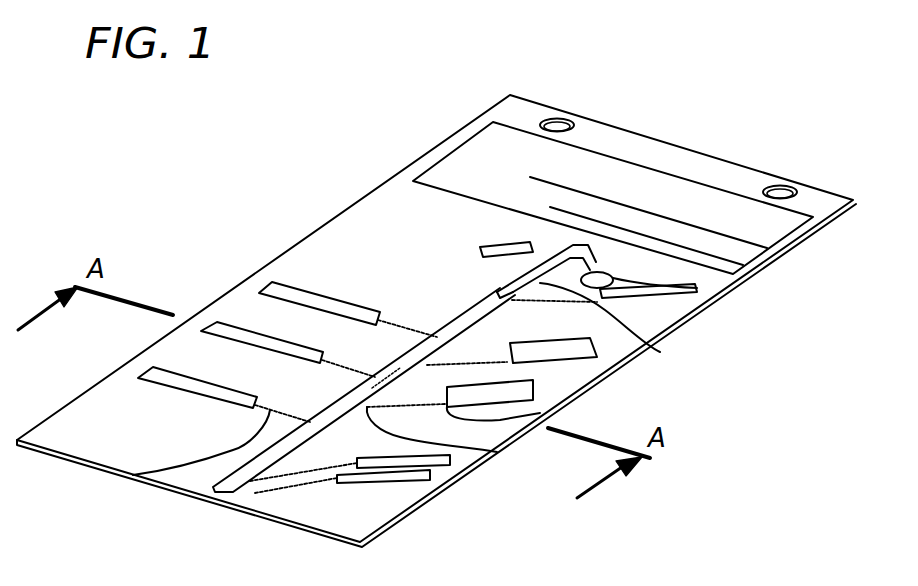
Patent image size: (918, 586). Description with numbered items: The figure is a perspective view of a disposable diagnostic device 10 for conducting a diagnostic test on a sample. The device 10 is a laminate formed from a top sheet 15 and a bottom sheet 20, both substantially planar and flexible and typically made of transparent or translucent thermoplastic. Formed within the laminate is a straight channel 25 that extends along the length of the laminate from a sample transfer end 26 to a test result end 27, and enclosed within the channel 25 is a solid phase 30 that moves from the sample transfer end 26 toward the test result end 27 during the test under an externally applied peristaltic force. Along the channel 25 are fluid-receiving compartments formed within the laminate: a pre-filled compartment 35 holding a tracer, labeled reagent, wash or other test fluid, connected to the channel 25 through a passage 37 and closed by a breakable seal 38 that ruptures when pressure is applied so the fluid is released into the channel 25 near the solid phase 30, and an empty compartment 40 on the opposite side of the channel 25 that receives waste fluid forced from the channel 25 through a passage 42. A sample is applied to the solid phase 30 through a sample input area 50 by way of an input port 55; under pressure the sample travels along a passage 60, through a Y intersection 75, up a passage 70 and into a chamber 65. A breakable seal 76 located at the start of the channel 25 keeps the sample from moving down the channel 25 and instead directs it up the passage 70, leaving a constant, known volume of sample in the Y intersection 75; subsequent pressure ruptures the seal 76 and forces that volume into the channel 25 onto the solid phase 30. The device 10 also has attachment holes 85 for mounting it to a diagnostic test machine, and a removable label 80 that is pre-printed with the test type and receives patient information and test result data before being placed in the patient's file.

The disposable diagnostic device 10 is at (314, 117).
The top sheet 15 is at (370, 513).
The bottom sheet 20 is at (812, 236).
The channel 25 is at (437, 330).
The sample transfer end 26 is at (490, 297).
The test result end 27 is at (218, 482).
The solid phase 30 is at (378, 370).
The pre-filled compartment 35 is at (593, 363).
The passage 37 is at (497, 452).
The breakable seal 38 is at (540, 413).
The empty compartment 40 is at (153, 377).
The passage 42 is at (133, 475).
The sample input area 50 is at (700, 288).
The input port 55 is at (650, 293).
The passage 60 is at (660, 352).
The chamber 65 is at (500, 246).
The passage 70 is at (493, 253).
The Y intersection 75 is at (498, 290).
The breakable seal 76 is at (488, 295).
The removable label 80 is at (482, 132).
The attachment holes 85 is at (555, 120).